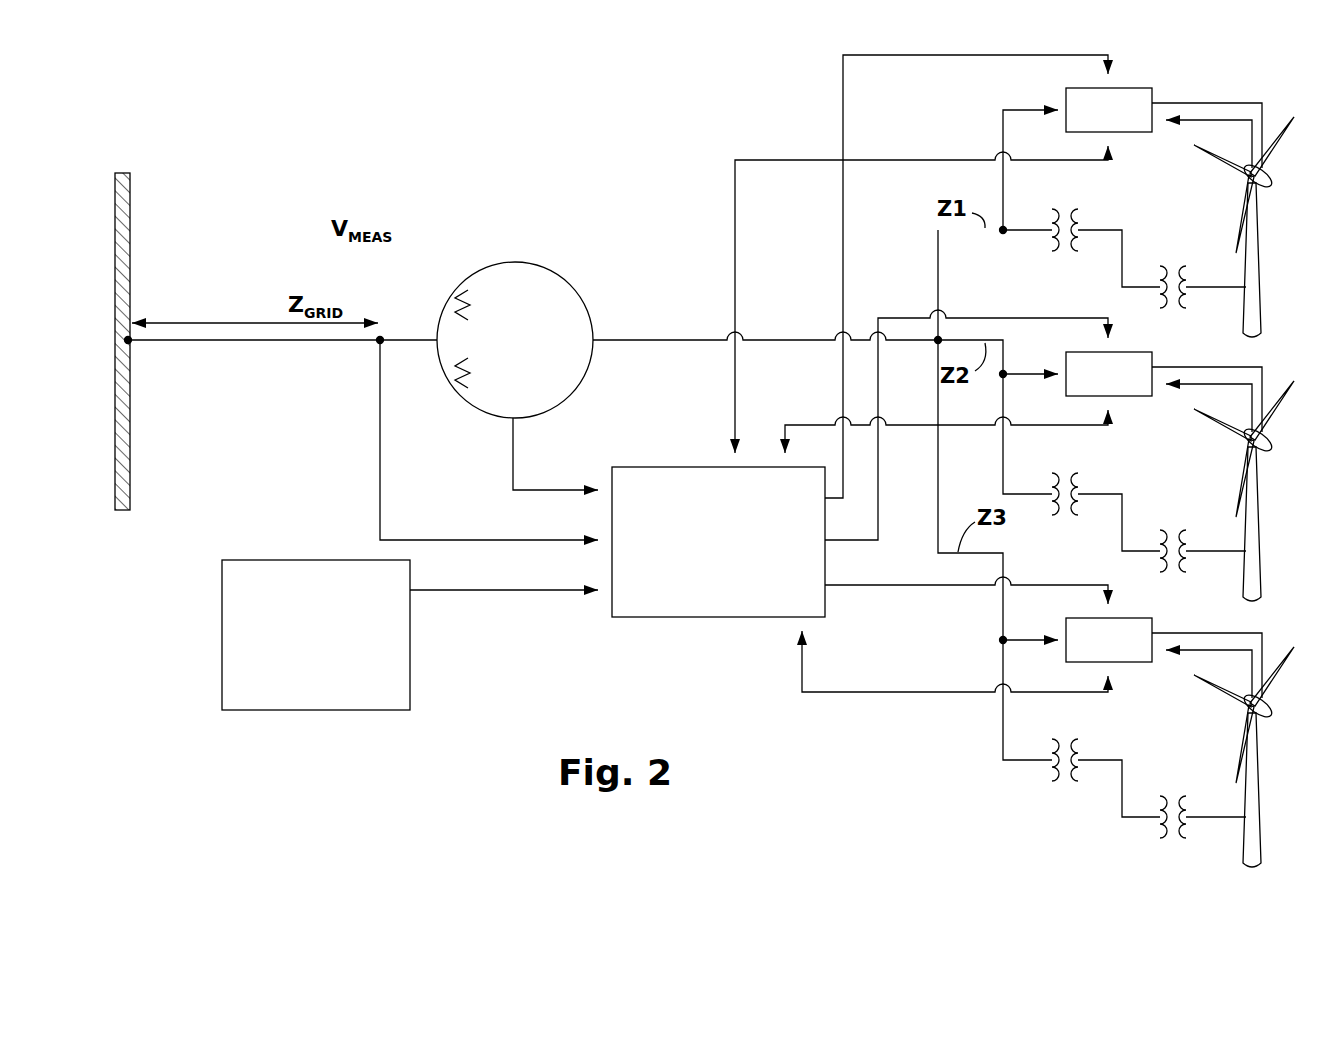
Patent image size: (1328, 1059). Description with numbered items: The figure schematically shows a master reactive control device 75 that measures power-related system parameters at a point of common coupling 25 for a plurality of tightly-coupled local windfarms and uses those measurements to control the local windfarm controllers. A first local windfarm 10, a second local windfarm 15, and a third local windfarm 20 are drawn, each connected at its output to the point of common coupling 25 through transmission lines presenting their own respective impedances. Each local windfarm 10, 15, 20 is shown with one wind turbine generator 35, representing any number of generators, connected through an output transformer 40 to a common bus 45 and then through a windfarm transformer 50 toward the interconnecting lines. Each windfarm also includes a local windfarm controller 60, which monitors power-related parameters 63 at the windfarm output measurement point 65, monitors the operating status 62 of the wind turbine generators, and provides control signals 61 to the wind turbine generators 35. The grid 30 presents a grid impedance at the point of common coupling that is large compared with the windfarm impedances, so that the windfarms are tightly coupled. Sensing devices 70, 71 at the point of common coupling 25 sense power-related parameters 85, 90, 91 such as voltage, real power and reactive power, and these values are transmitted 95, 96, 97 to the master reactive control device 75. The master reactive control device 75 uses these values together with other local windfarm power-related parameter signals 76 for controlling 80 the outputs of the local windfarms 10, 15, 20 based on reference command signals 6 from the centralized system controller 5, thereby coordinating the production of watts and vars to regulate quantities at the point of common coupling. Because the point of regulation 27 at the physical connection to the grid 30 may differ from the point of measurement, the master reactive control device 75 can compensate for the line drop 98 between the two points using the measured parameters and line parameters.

The centralized system controller 5 is at (345, 712).
The reference command signals 6 is at (548, 592).
The first local windfarm 10 is at (1249, 227).
The second local windfarm 15 is at (1249, 491).
The third local windfarm 20 is at (1249, 757).
The point of common coupling 25 is at (378, 344).
The point of regulation 27 is at (132, 345).
The grid 30 is at (130, 256).
The wind turbine generator 35 is at (1249, 492).
The output transformer 40 is at (1192, 272).
The common bus 45 is at (1122, 252).
The windfarm transformer 50 is at (1084, 216).
The local windfarm controller 60 is at (1152, 90).
The control signals 61 is at (1262, 104).
The operating status signals 62 is at (1176, 122).
The power-related parameters 63 is at (1003, 203).
The output measurement point 65 is at (1003, 234).
The sensing device 70 is at (384, 402).
The sensing device 71 is at (577, 292).
The master reactive control device 75 is at (668, 618).
The local windfarm power-related parameter signals 76 is at (735, 415).
The controlling signals 80 is at (975, 56).
The power-related parameter 85 is at (380, 490).
The power-related parameter 90 is at (458, 300).
The power-related parameter 91 is at (462, 385).
The transmitted power-related parameter 95 is at (570, 454).
The transmitted power-related parameter 96 is at (555, 454).
The power measurement signal 97 is at (515, 465).
The line drop 98 is at (214, 322).